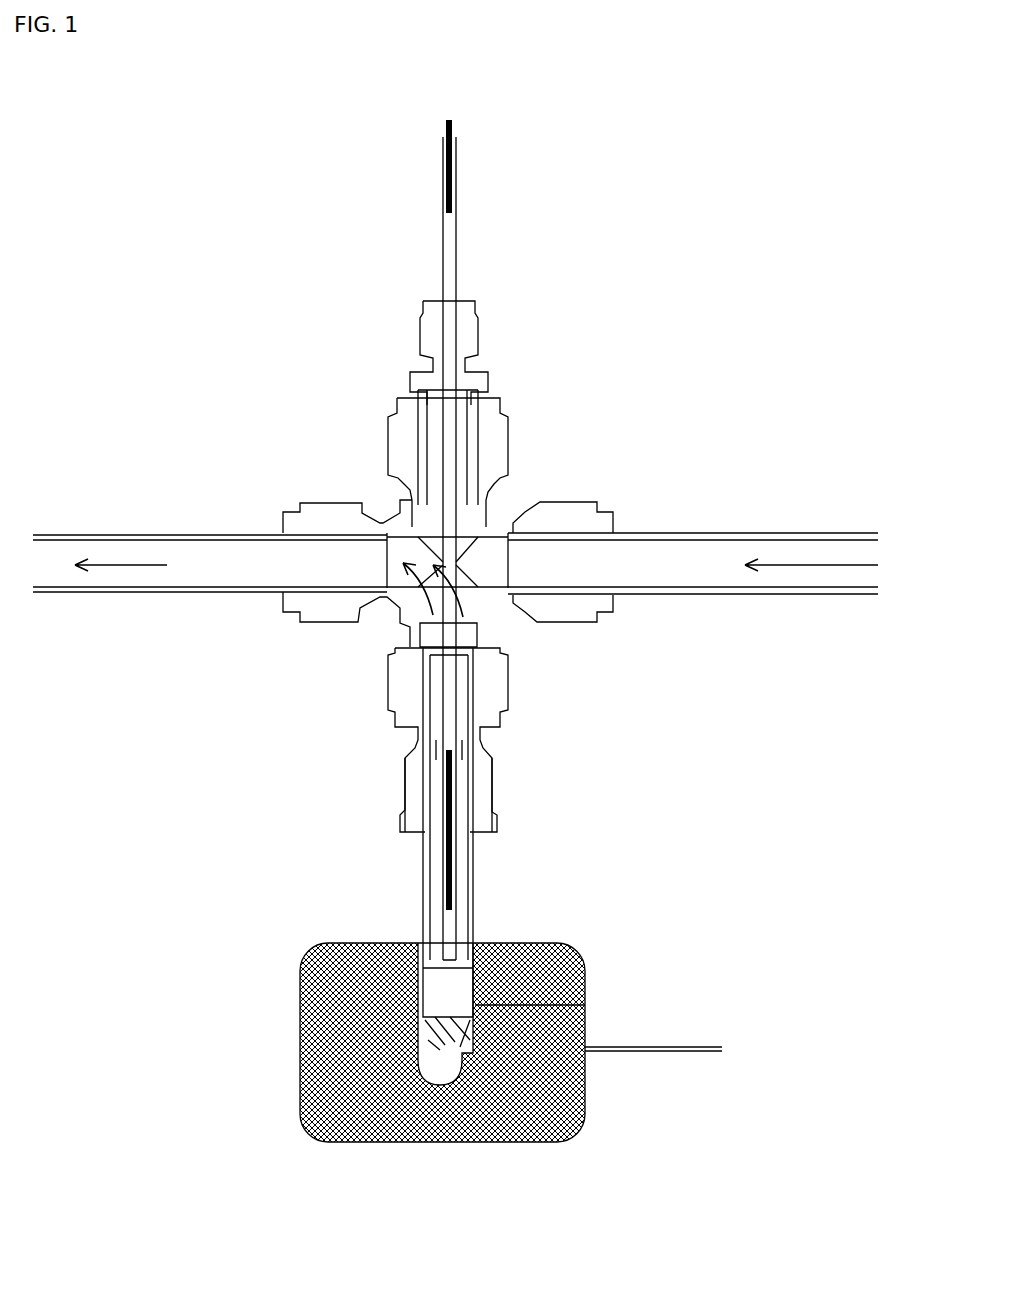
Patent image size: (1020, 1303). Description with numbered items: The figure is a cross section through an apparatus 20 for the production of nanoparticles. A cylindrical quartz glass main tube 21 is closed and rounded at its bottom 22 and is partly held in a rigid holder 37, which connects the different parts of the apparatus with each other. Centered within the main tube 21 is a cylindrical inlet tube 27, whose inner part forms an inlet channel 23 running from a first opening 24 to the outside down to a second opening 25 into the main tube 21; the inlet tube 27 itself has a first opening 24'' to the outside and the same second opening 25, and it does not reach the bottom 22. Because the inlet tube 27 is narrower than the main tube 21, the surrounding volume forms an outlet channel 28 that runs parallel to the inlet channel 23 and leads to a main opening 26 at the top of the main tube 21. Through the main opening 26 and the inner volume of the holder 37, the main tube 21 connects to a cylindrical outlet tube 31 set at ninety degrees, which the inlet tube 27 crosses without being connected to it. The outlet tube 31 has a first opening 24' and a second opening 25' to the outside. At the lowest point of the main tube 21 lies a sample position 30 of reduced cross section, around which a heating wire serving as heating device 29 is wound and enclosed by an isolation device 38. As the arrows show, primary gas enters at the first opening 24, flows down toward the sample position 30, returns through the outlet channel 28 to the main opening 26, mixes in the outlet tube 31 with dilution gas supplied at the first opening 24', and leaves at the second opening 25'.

The apparatus 20 is at (727, 115).
The main tube 21 is at (470, 930).
The bottom 22 is at (455, 1035).
The inlet channel 23 is at (475, 748).
The first opening 24 is at (484, 515).
The first opening 24' is at (708, 610).
The first opening 24'' is at (498, 615).
The second opening 25 is at (409, 927).
The second opening 25' is at (207, 611).
The main opening 26 is at (500, 642).
The inlet tube 27 is at (458, 243).
The outlet channel 28 is at (433, 808).
The heating device 29 is at (300, 1076).
The sample position 30 is at (585, 1003).
The outlet tube 31 is at (213, 572).
The holder 37 is at (514, 436).
The isolation device 38 is at (592, 1128).